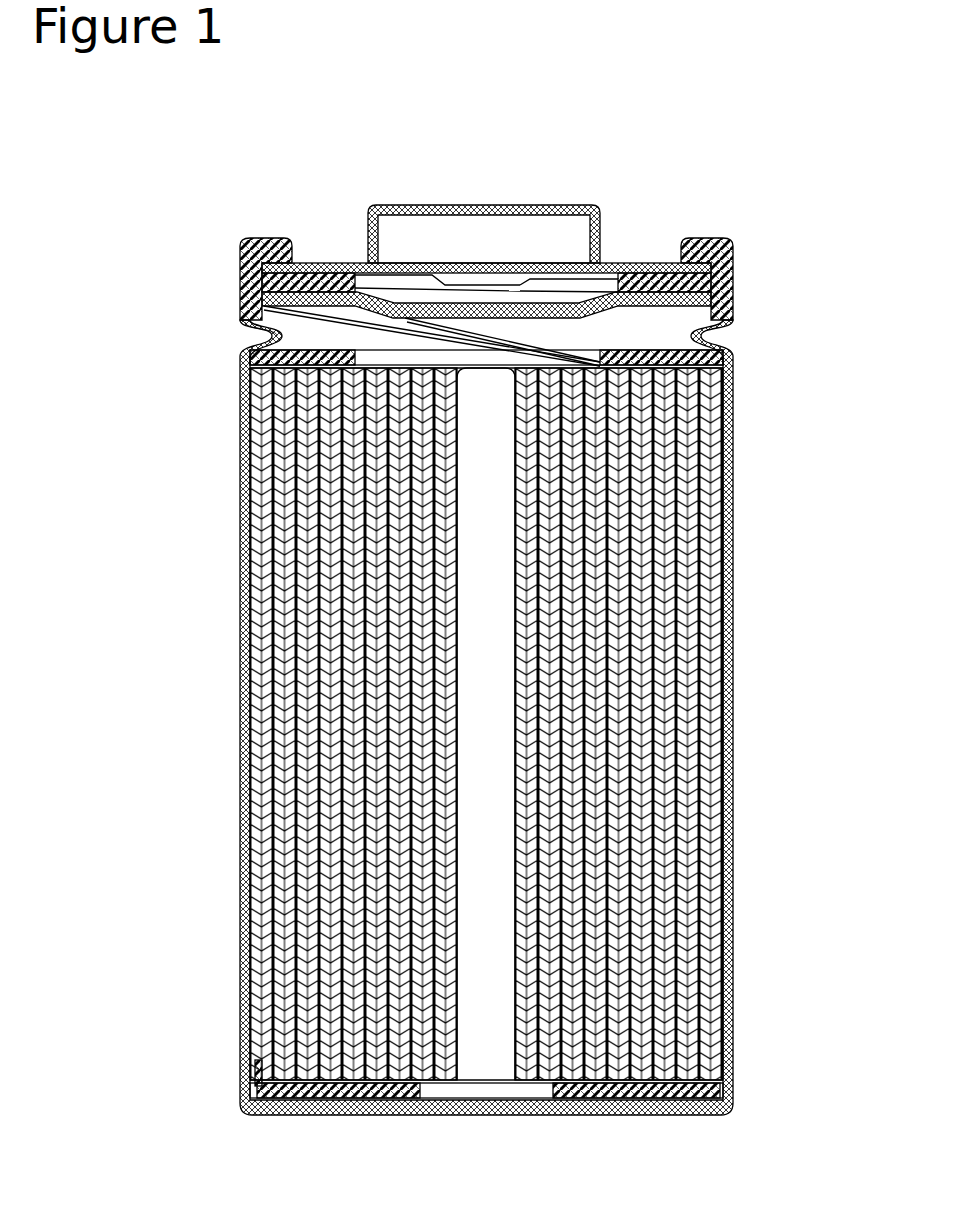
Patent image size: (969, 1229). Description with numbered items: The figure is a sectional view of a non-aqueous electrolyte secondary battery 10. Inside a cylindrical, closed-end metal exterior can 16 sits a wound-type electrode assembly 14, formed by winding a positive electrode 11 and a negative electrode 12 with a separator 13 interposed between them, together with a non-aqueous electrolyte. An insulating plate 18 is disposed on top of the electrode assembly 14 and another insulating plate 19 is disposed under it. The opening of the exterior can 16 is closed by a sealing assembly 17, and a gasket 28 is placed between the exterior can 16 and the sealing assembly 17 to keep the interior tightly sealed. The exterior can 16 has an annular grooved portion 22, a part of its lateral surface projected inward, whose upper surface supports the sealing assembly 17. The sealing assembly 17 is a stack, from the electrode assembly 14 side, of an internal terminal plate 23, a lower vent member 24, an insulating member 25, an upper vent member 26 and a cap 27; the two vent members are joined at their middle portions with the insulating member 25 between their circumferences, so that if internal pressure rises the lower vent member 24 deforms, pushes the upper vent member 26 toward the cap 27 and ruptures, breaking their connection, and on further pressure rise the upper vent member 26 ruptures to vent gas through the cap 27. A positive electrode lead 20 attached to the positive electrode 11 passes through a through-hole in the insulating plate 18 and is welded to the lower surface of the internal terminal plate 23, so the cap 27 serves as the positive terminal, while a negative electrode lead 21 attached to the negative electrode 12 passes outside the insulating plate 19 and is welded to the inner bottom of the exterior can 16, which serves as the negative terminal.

The non-aqueous electrolyte secondary battery 10 is at (752, 108).
The positive electrode 11 is at (619, 724).
The negative electrode 12 is at (733, 787).
The separator 13 is at (353, 724).
The wound-type electrode assembly 14 is at (557, 724).
The exterior can 16 is at (735, 438).
The sealing assembly 17 is at (486, 213).
The insulating plate 18 is at (728, 354).
The insulating plate 19 is at (733, 1091).
The positive electrode lead 20 is at (268, 306).
The negative electrode lead 21 is at (245, 1081).
The grooved portion 22 is at (262, 332).
The internal terminal plate 23 is at (540, 303).
The lower vent member 24 is at (388, 275).
The insulating member 25 is at (322, 263).
The upper vent member 26 is at (413, 273).
The cap 27 is at (550, 279).
The gasket 28 is at (735, 260).